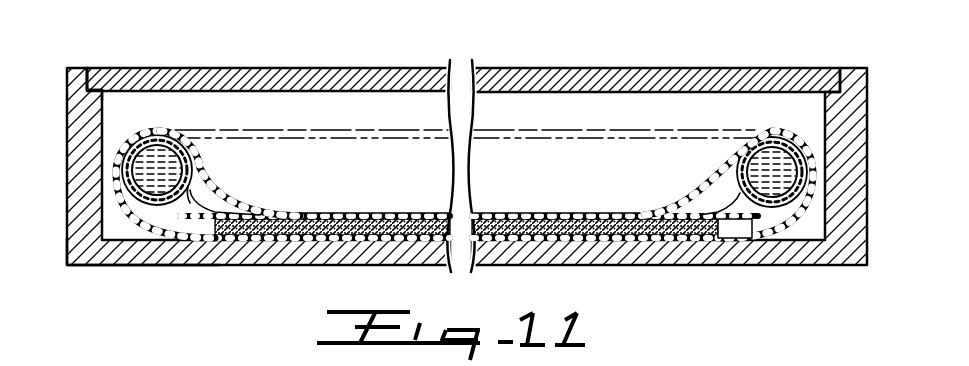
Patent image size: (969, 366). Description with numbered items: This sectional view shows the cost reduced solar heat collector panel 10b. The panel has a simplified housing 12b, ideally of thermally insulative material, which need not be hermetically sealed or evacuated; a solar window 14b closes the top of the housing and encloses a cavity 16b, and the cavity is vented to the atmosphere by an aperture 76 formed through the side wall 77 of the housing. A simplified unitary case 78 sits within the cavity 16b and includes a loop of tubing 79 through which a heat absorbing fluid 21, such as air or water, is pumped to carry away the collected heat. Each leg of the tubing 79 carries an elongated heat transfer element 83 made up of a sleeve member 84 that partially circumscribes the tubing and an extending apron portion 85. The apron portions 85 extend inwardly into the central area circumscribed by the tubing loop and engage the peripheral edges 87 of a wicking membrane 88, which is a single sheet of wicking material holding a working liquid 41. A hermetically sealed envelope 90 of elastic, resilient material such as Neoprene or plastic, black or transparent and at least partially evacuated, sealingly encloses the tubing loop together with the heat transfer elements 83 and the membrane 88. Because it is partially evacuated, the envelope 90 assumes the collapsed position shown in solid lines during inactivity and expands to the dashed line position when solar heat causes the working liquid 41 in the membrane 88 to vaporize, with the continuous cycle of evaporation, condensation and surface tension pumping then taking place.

The solar heat collector panel 10b is at (467, 165).
The housing 12b is at (150, 262).
The solar window 14b is at (211, 69).
The cavity 16b is at (104, 99).
The heat absorbing fluid 21 is at (780, 166).
The working liquid 41 is at (160, 218).
The aperture 76 is at (66, 242).
The side wall 77 is at (72, 152).
The unitary case 78 is at (168, 119).
The tubing 79 is at (190, 167).
The heat transfer element 83 is at (222, 197).
The sleeve member 84 is at (205, 185).
The apron portion 85 is at (194, 222).
The peripheral edges 87 is at (230, 240).
The wicking membrane 88 is at (590, 214).
The envelope 90 is at (302, 212).